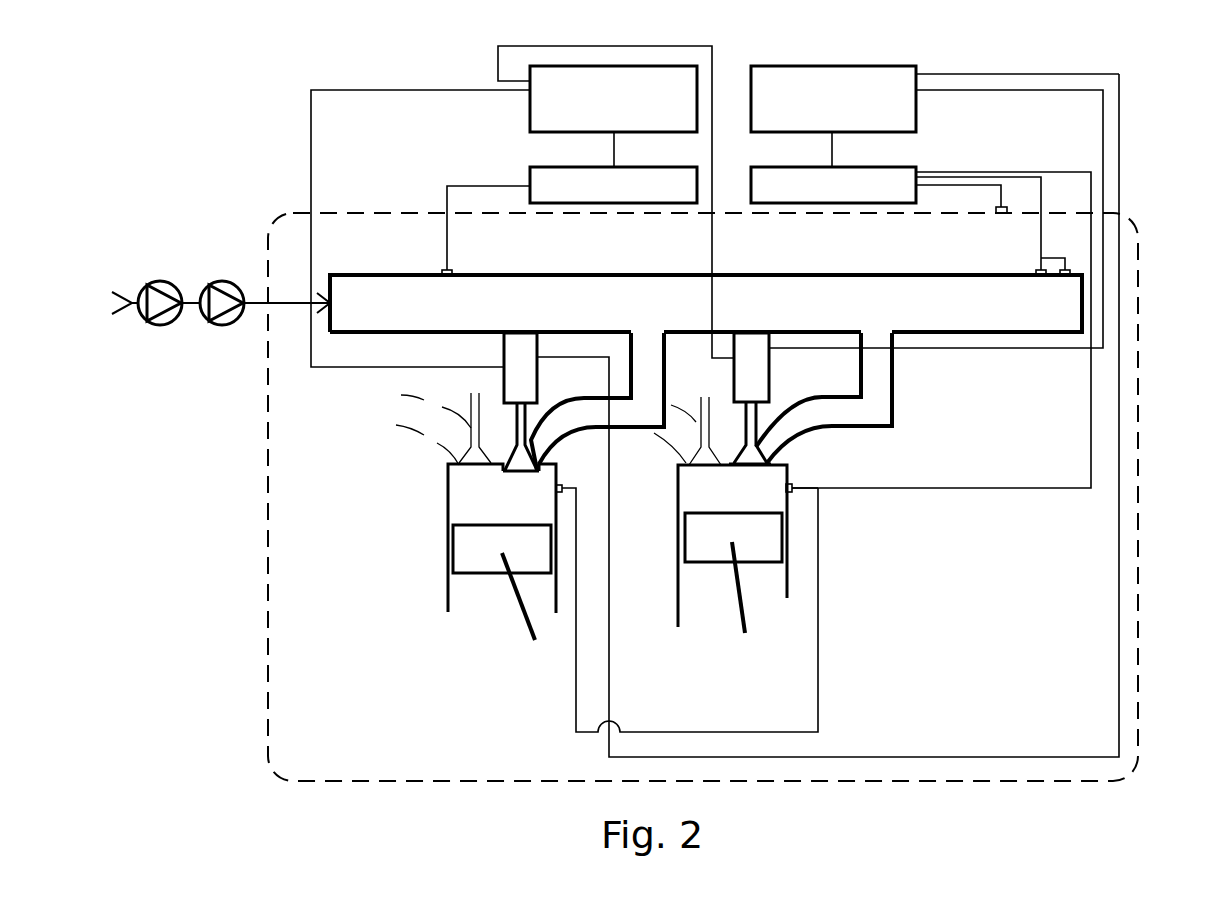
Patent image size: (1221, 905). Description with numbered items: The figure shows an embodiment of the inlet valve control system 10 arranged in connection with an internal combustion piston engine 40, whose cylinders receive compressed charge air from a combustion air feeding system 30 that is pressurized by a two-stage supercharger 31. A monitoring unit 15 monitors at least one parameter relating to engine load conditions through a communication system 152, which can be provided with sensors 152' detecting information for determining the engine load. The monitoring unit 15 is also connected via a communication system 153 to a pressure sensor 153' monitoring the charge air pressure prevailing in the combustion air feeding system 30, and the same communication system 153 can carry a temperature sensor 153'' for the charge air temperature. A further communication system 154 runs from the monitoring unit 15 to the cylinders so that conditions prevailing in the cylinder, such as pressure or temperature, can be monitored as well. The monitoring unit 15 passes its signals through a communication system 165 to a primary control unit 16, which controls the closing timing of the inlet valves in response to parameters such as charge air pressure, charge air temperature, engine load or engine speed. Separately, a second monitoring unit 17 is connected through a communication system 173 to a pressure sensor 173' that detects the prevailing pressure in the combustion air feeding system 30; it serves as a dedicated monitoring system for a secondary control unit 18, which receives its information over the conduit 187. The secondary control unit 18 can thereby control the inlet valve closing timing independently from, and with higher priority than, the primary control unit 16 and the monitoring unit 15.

The inlet valve control system 10 is at (977, 65).
The monitoring unit 15 is at (848, 197).
The primary control unit 16 is at (848, 108).
The second monitoring unit 17 is at (628, 197).
The secondary control unit 18 is at (628, 108).
The combustion air feeding system 30 is at (691, 309).
The supercharger 31 is at (190, 276).
The internal combustion piston engine 40 is at (375, 781).
The communication system 152 is at (946, 225).
The sensor 152' is at (999, 176).
The communication system 153 is at (990, 223).
The pressure sensor 153' is at (1072, 248).
The temperature sensor 153'' is at (995, 266).
The communication system 154 is at (941, 317).
The communication system 165 is at (834, 152).
The communication system 173 is at (428, 228).
The pressure sensor 173' is at (387, 260).
The conduit 187 is at (614, 150).